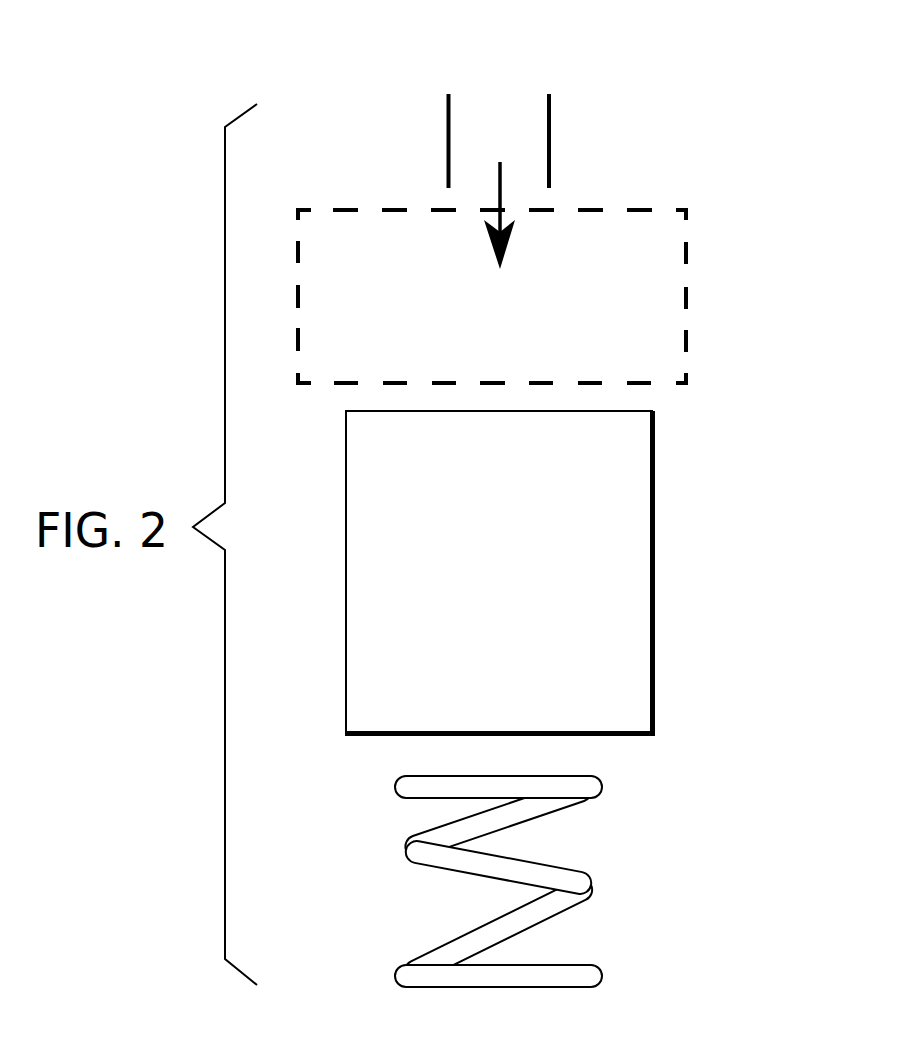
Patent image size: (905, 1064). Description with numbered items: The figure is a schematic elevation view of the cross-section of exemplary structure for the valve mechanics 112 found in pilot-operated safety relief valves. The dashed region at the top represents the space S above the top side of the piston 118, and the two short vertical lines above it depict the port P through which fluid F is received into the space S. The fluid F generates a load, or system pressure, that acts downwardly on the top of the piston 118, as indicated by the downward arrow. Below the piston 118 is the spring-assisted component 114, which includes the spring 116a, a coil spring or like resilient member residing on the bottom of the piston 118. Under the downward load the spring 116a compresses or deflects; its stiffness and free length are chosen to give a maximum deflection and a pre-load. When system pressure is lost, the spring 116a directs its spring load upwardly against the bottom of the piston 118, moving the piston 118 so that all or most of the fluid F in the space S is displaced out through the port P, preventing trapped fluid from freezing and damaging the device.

The valve mechanics 112 is at (681, 159).
The spring-assisted component 114 is at (577, 684).
The piston 118 is at (653, 527).
The spring 116a is at (652, 849).
The port P is at (420, 65).
The fluid F is at (492, 215).
The space S is at (608, 276).